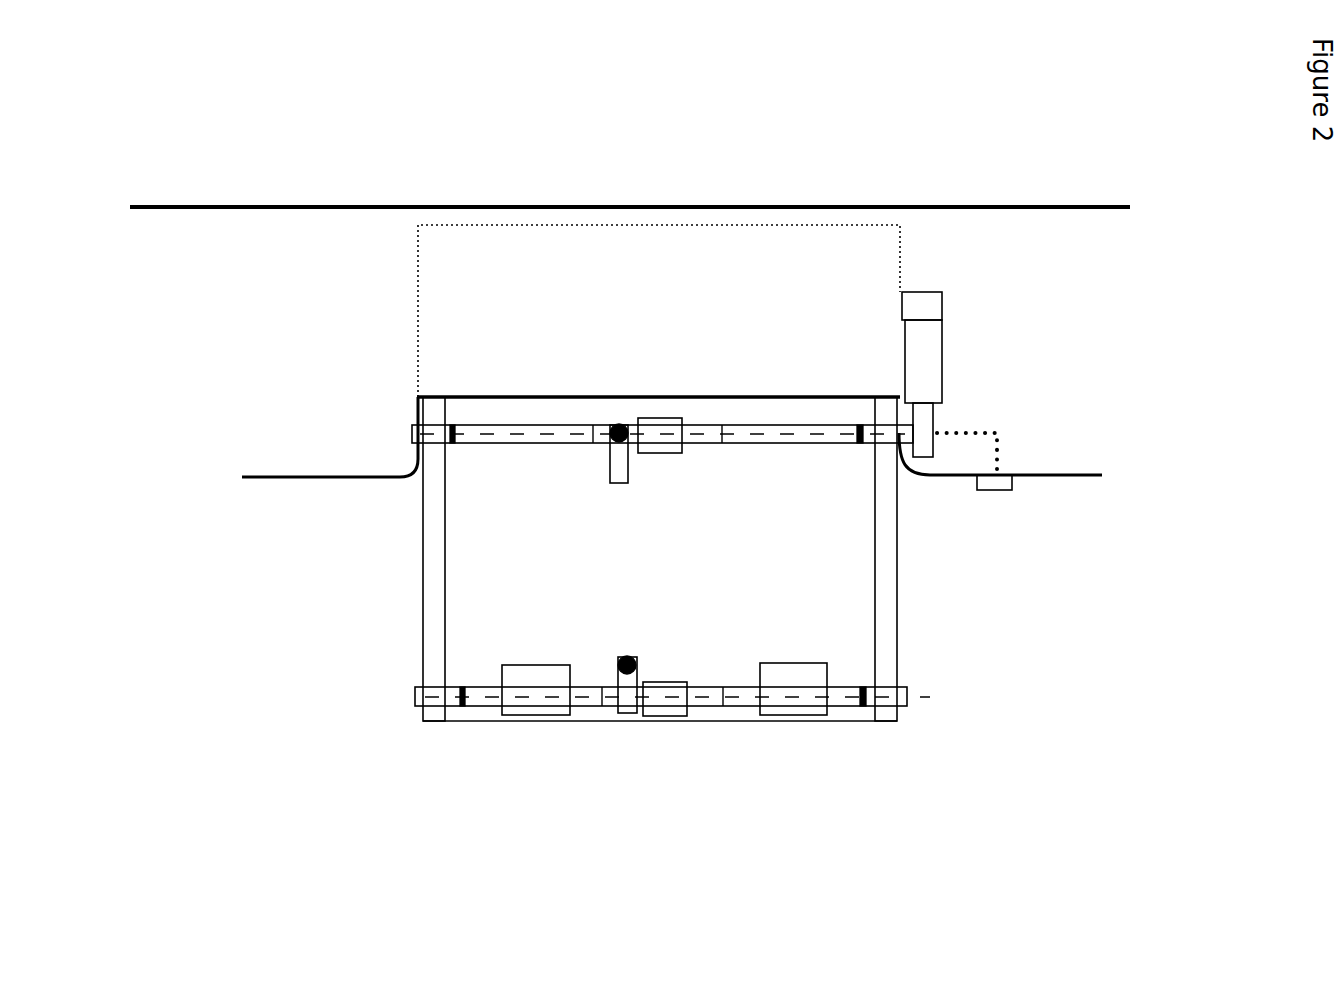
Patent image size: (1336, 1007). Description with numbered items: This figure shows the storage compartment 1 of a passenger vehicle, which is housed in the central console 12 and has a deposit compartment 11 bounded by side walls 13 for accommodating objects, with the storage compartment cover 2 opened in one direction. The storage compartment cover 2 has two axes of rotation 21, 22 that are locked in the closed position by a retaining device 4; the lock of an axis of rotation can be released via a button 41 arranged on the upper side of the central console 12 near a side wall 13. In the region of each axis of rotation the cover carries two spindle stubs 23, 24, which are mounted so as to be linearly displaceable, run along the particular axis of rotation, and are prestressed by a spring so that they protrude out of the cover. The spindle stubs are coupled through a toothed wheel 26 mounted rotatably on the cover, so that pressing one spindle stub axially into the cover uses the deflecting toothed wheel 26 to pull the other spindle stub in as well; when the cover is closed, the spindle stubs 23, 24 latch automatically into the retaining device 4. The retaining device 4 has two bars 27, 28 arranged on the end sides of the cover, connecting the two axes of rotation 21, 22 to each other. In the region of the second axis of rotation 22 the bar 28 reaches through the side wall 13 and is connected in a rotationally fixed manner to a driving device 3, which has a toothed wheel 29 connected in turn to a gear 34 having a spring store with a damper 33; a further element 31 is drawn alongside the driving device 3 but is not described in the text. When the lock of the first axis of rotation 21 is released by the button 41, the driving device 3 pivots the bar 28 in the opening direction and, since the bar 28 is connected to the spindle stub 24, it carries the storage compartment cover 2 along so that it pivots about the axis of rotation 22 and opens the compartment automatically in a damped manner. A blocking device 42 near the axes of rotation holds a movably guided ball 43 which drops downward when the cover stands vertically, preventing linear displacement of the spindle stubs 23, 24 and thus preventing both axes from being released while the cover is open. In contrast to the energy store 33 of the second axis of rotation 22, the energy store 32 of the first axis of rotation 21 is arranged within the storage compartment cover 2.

The storage compartment 1 is at (1170, 775).
The storage compartment cover 2 is at (665, 559).
The driving device 3 is at (981, 335).
The retaining device 4 is at (1003, 488).
The deposit compartment 11 is at (478, 240).
The central console 12 is at (212, 234).
The side wall 13 is at (864, 340).
The first axis of rotation 21 is at (412, 697).
The second axis of rotation 22 is at (410, 432).
The spindle stub 23 is at (508, 443).
The spindle stub 24 is at (805, 440).
The toothed wheel 26 is at (663, 680).
The bar 27 is at (435, 580).
The bar 28 is at (892, 592).
The toothed wheel 29 is at (923, 415).
The signal line 31 is at (998, 452).
The energy store 32 is at (512, 673).
The damper 33 is at (932, 305).
The gear 34 is at (927, 370).
The button 41 is at (620, 423).
The blocking device 42 is at (616, 455).
The ball 43 is at (628, 656).